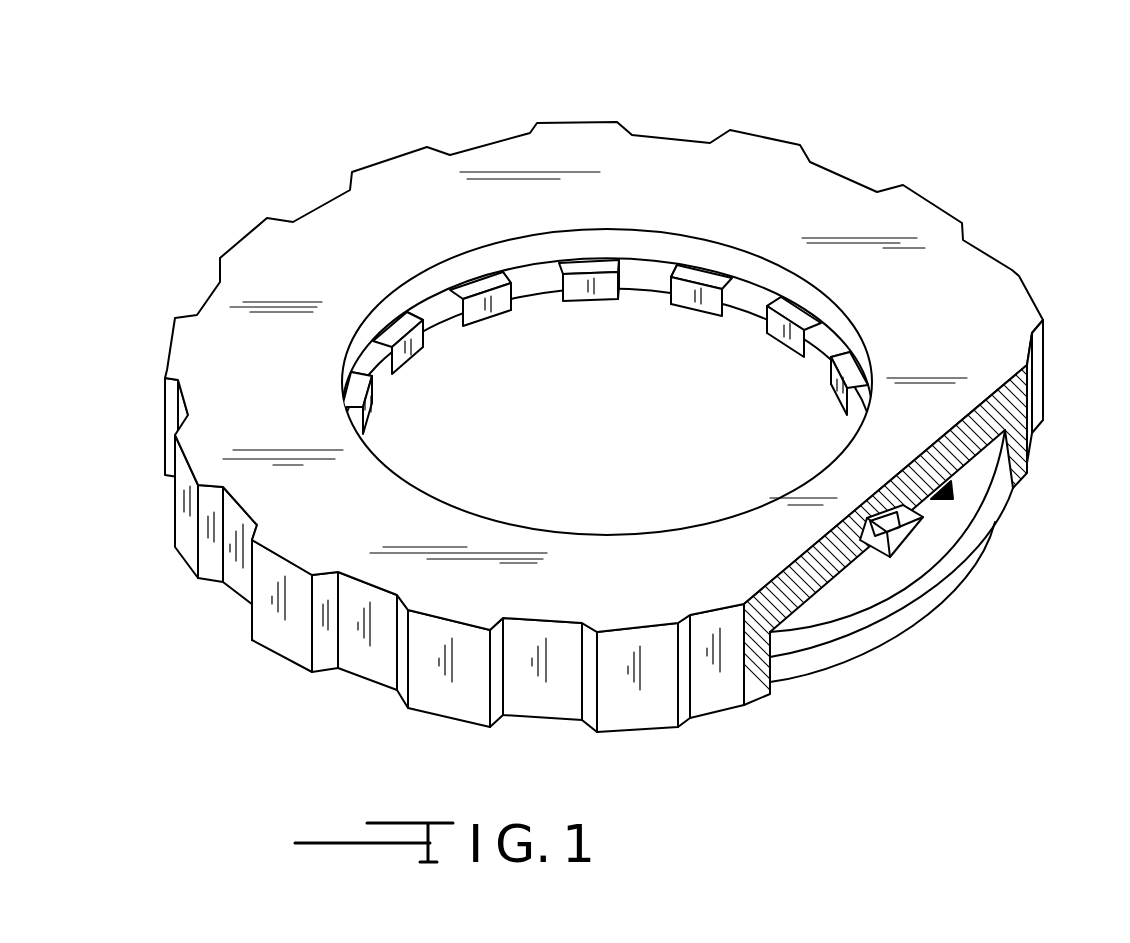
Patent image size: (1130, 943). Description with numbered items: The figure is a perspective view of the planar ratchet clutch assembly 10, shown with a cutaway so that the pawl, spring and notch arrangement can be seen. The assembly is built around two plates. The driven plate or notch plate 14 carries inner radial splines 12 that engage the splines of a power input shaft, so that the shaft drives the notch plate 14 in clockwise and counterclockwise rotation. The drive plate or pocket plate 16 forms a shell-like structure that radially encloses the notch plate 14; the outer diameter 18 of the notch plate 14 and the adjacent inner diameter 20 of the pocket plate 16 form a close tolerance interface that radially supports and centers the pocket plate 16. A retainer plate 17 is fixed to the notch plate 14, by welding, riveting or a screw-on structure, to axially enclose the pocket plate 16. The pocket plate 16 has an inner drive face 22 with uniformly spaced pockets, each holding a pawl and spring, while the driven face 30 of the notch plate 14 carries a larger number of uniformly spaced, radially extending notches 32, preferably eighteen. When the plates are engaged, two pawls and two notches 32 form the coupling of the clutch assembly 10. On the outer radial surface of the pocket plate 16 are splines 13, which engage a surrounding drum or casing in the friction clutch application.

The planar ratchet clutch assembly 10 is at (847, 123).
The inner radial splines 12 is at (590, 297).
The splines 13 is at (647, 710).
The notch plate 14 is at (875, 572).
The pocket plate 16 is at (983, 307).
The retainer plate 17 is at (933, 588).
The outer diameter 18 is at (974, 513).
The inner diameter 20 is at (772, 643).
The inner drive face 22 is at (1013, 488).
The driven face 30 is at (850, 573).
The notches 32 is at (853, 576).